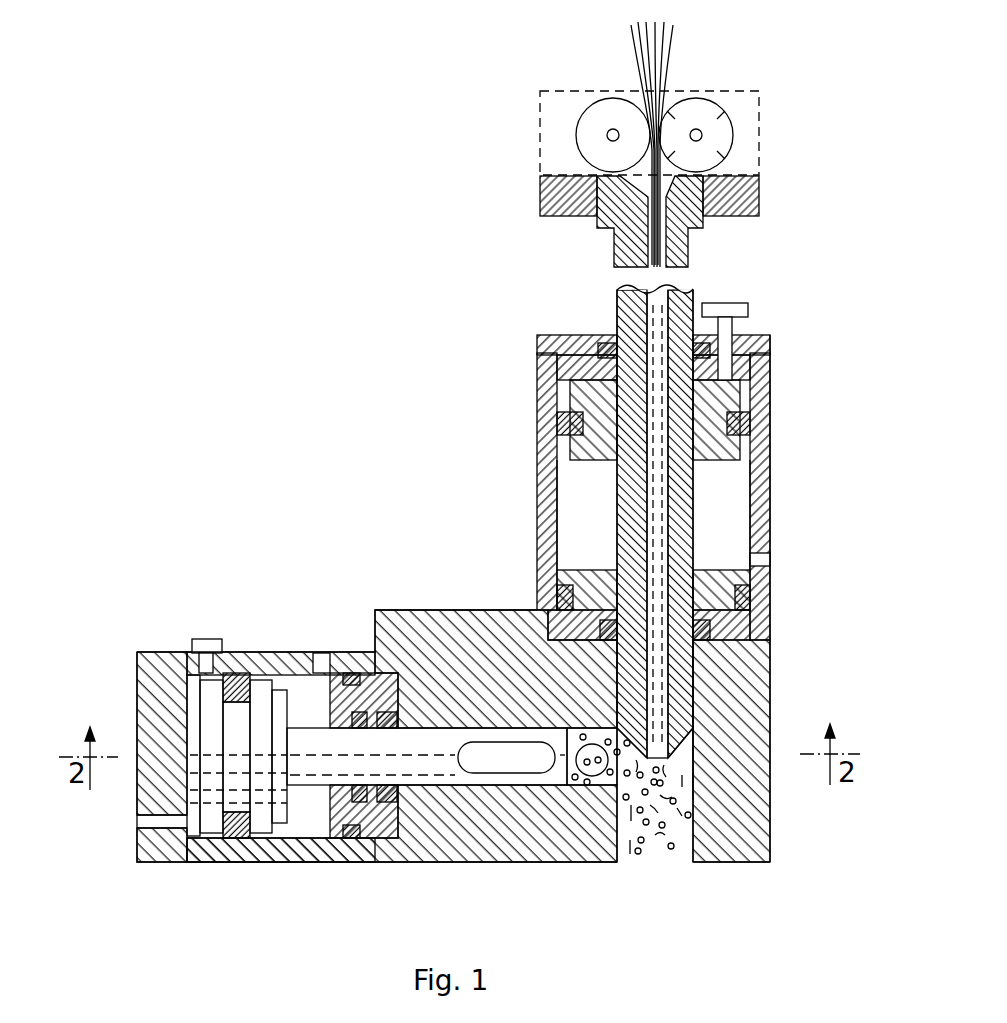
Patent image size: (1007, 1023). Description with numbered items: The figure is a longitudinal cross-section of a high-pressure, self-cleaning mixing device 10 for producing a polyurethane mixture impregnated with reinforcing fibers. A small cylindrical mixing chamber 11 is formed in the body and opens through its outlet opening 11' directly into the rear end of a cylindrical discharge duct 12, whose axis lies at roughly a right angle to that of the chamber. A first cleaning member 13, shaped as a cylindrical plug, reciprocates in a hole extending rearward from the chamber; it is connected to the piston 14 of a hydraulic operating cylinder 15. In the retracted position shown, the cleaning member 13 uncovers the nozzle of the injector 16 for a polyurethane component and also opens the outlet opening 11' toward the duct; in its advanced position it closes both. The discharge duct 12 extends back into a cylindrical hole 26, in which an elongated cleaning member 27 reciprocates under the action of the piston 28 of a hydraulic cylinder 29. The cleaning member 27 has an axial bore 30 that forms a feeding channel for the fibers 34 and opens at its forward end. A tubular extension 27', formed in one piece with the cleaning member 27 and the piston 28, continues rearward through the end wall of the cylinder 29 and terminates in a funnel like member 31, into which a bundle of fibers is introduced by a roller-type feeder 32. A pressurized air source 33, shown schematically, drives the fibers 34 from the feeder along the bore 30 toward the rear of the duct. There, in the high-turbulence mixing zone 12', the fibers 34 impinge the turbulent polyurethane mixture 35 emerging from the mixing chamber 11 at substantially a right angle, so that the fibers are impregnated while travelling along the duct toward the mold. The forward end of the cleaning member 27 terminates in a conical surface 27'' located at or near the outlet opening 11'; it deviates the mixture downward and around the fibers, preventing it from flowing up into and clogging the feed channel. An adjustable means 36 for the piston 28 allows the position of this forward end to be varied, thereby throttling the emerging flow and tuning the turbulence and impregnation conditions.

The mixing device 10 is at (760, 737).
The mixing chamber 11 is at (552, 644).
The outlet opening 11' is at (590, 821).
The discharge duct 12 is at (656, 778).
The high-turbulence mixing zone 12' is at (777, 780).
The first cleaning member 13 is at (330, 745).
The piston 14 is at (218, 737).
The hydraulic operating cylinder 15 is at (158, 668).
The injector 16 is at (583, 752).
The cylindrical hole 26 is at (678, 748).
The cleaning member 27 is at (738, 509).
The tubular extension 27' is at (574, 509).
The conical surface 27'' is at (744, 667).
The piston 28 is at (578, 398).
The hydraulic cylinder 29 is at (763, 426).
The axial bore 30 is at (660, 513).
The funnel like member 31 is at (692, 220).
The roller-type feeder 32 is at (748, 193).
The pressurized air source 33 is at (540, 132).
The fibers 34 is at (663, 72).
The polyurethane mixture 35 is at (665, 826).
The adjustable means 36 is at (749, 308).